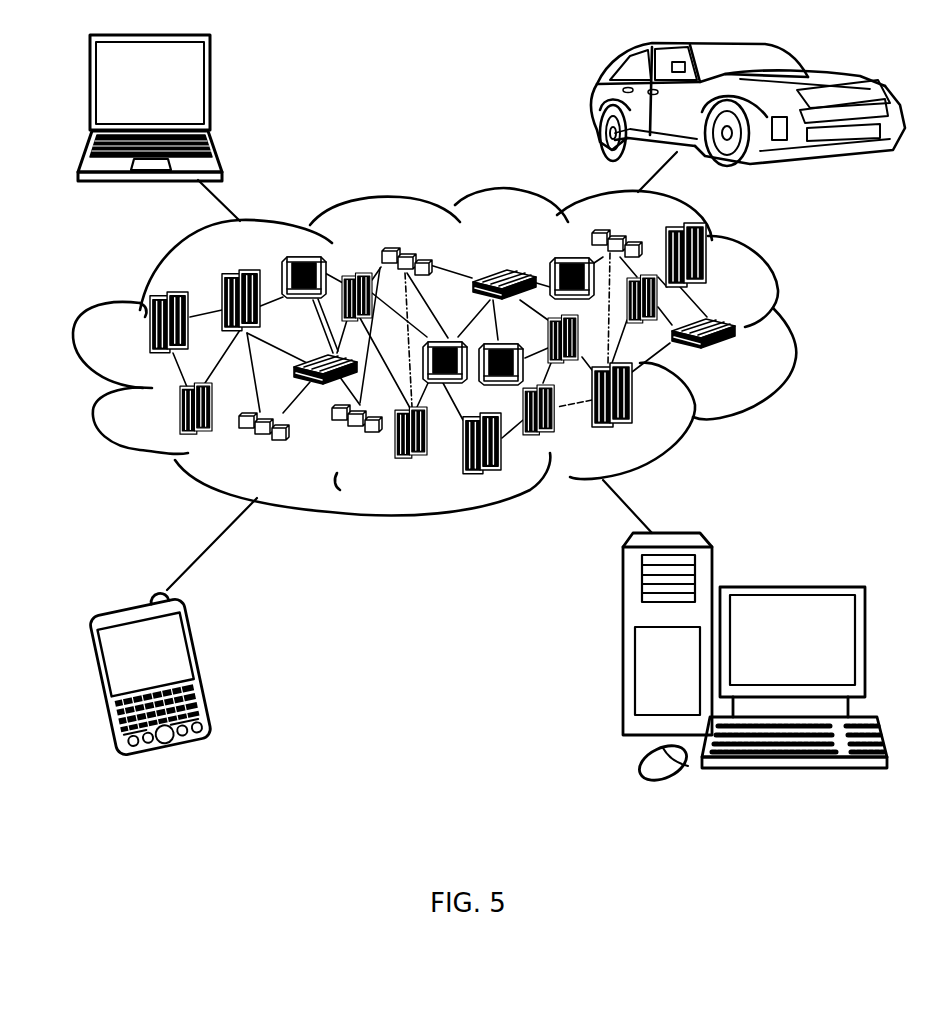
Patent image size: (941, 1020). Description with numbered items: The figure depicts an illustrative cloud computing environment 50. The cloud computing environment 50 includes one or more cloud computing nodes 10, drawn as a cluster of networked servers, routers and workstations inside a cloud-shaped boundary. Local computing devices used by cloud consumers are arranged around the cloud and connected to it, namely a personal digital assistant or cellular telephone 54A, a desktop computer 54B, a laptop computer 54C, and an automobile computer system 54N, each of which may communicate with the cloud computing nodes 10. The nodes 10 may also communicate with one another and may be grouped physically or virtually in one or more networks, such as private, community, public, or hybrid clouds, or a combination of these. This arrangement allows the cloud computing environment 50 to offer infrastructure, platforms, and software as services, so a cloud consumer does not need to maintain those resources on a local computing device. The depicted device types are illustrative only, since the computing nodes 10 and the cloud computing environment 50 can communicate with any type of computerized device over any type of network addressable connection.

The cloud computing node 10 is at (742, 356).
The cloud computing environment 50 is at (790, 330).
The personal digital assistant or cellular telephone 54A is at (203, 667).
The desktop computer 54B is at (788, 587).
The laptop computer 54C is at (212, 88).
The automobile computer system 54N is at (598, 103).